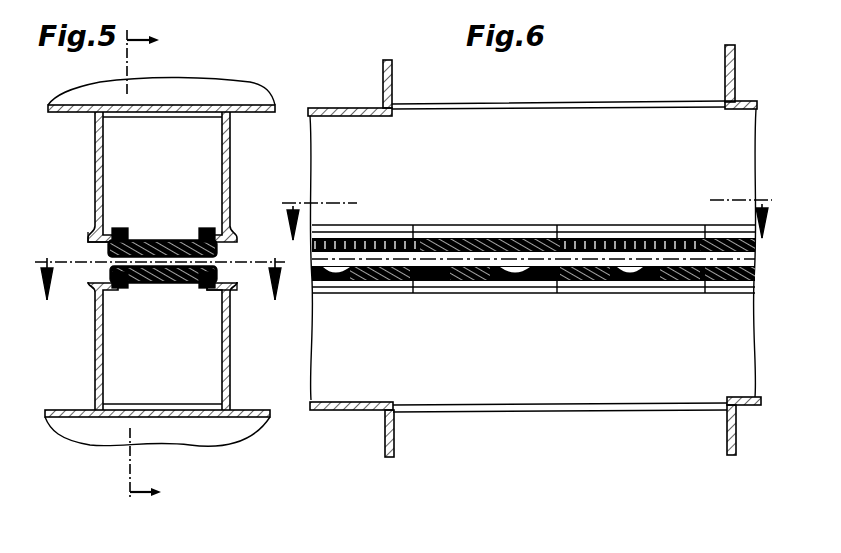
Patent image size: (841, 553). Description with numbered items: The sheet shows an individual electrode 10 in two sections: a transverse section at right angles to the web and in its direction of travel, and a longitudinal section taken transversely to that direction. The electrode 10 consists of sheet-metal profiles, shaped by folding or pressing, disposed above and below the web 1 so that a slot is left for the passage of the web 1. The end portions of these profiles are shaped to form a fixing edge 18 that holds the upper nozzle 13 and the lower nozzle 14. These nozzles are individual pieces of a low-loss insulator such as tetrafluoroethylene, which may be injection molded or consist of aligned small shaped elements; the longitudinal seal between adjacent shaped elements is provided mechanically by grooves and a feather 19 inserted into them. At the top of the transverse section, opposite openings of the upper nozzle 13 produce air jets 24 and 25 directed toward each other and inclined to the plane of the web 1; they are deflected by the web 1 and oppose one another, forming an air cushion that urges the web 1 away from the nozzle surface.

In FIG. 5, the web 1 is at (78, 263).
In FIG. 5, the electrode 10 is at (98, 167).
In FIG. 6, the electrode 10 is at (534, 251).
In FIG. 5, the upper nozzle 13 is at (161, 238).
In FIG. 6, the upper nozzle 13 is at (447, 238).
In FIG. 5, the lower nozzle 14 is at (163, 285).
In FIG. 6, the lower nozzle 14 is at (449, 282).
In FIG. 5, the fixing edge 18 is at (224, 232).
In FIG. 6, the feather 19 is at (548, 282).
In FIG. 5, the air jet 24 is at (132, 230).
In FIG. 5, the air jet 25 is at (196, 230).